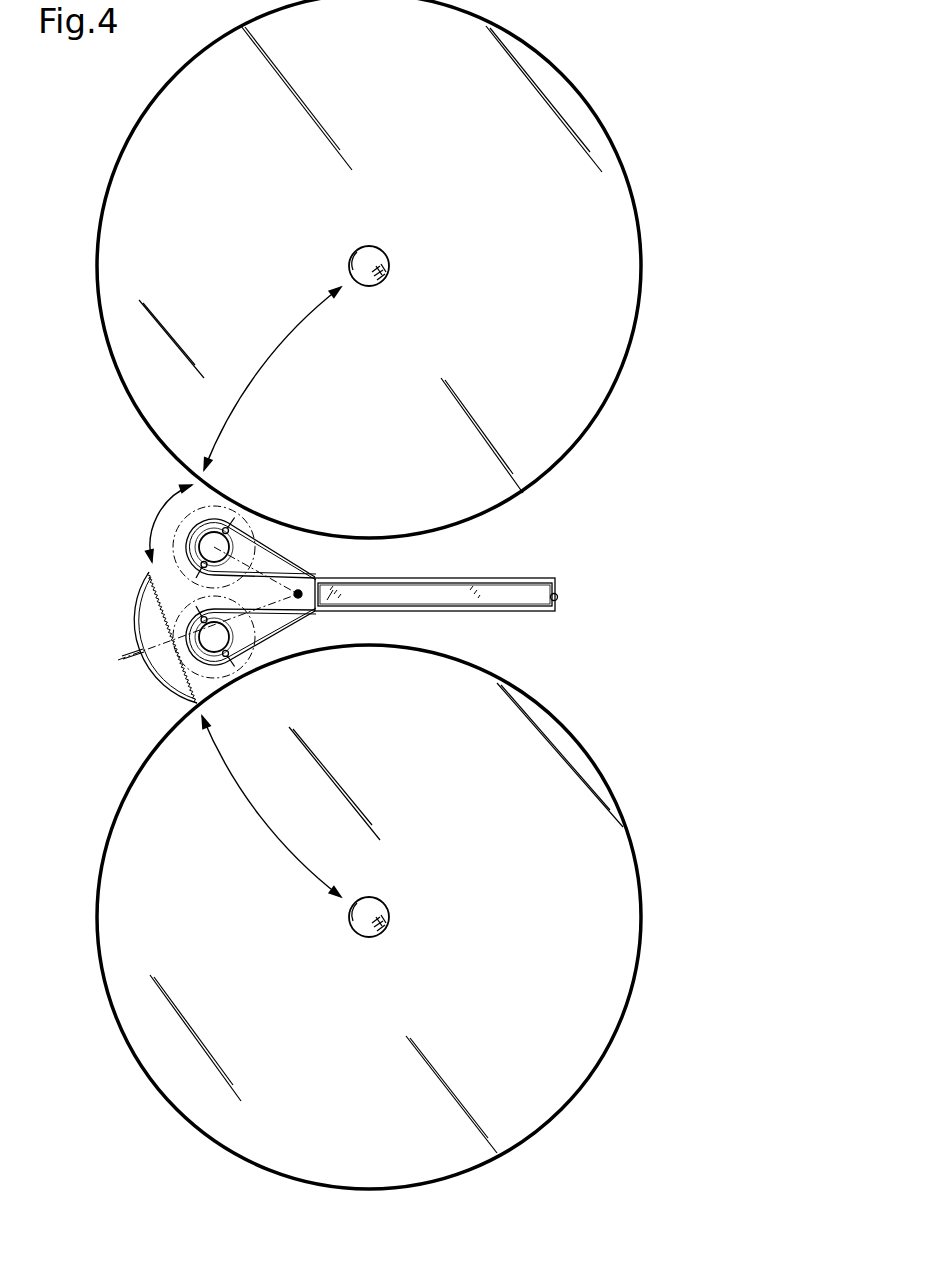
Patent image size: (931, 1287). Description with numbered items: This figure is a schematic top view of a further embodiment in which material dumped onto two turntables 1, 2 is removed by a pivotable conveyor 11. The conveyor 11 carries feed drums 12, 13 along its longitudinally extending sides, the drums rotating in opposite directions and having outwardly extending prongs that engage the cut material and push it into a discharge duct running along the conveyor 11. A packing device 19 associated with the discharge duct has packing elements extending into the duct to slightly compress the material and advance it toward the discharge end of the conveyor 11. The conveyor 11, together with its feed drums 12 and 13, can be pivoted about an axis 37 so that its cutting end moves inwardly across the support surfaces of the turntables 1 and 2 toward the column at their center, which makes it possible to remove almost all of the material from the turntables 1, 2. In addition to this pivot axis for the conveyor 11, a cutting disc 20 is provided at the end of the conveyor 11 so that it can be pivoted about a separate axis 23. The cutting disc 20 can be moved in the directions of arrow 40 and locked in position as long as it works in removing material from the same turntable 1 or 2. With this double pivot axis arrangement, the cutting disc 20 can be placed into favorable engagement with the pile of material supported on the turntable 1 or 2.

The turntable 1 is at (410, 123).
The turntable 2 is at (510, 867).
The conveyor 11 is at (452, 578).
The feed drum 12 is at (229, 641).
The feed drum 13 is at (228, 540).
The packing device 19 is at (508, 590).
The cutting disc 20 is at (172, 675).
The separate axis 23 is at (299, 590).
The axis 37 is at (558, 597).
The arrow 40 is at (164, 518).